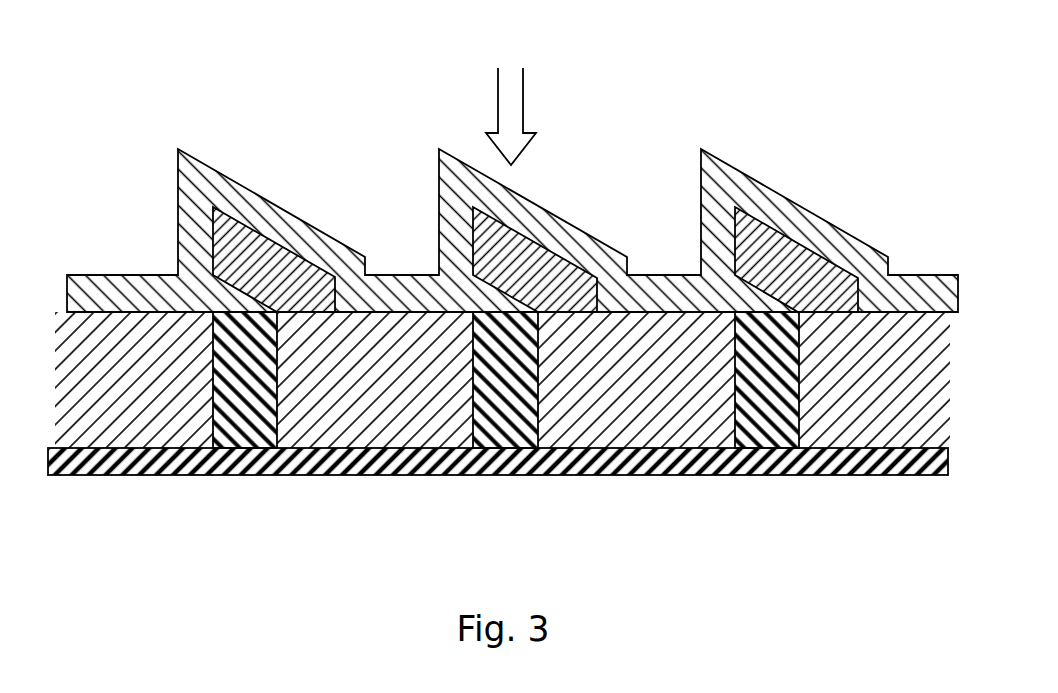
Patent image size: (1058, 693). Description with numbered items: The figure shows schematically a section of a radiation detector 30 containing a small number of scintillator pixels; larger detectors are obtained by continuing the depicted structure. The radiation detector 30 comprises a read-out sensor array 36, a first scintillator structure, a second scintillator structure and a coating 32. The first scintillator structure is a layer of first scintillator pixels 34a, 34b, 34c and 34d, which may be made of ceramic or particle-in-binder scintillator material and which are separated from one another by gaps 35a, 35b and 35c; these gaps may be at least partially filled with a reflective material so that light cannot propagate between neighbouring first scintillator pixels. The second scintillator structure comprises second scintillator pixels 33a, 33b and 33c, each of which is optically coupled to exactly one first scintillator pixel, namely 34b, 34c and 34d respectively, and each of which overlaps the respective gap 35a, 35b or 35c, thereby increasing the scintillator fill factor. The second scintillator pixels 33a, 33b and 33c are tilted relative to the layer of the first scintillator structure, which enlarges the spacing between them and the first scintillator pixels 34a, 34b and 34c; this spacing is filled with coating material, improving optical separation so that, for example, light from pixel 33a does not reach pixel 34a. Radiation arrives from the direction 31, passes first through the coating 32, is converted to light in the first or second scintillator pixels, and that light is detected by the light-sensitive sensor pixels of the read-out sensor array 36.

The radiation detector 30 is at (110, 200).
The direction 31 is at (518, 118).
The coating 32 is at (210, 190).
The second scintillator pixel 33a is at (264, 272).
The second scintillator pixel 33b is at (548, 275).
The second scintillator pixel 33c is at (805, 280).
The first scintillator pixel 34a is at (118, 402).
The first scintillator pixel 34b is at (384, 403).
The first scintillator pixel 34c is at (656, 403).
The first scintillator pixel 34d is at (882, 402).
The gap 35a is at (253, 423).
The gap 35b is at (512, 427).
The gap 35c is at (765, 423).
The read-out sensor array 36 is at (159, 466).